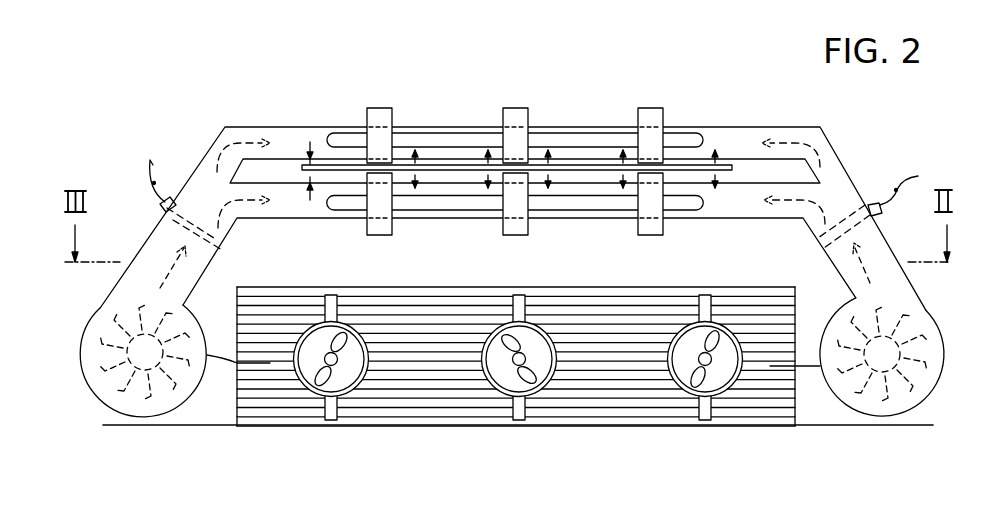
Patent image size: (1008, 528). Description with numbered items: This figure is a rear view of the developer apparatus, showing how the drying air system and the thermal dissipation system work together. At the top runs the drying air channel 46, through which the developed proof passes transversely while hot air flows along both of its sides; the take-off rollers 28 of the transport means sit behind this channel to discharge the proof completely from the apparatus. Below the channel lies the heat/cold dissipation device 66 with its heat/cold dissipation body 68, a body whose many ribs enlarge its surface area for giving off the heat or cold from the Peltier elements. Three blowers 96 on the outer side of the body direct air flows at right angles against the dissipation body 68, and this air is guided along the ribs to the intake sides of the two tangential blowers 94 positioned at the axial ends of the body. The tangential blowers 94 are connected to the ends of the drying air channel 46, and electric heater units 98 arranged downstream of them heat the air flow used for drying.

The take-off rollers 28 is at (381, 112).
The drying air channel 46 is at (762, 127).
The heat/cold dissipation device 66 is at (383, 430).
The heat/cold dissipation body 68 is at (450, 417).
The tangential blowers 94 is at (180, 383).
The blowers 96 is at (312, 367).
The electric heater units 98 is at (186, 218).